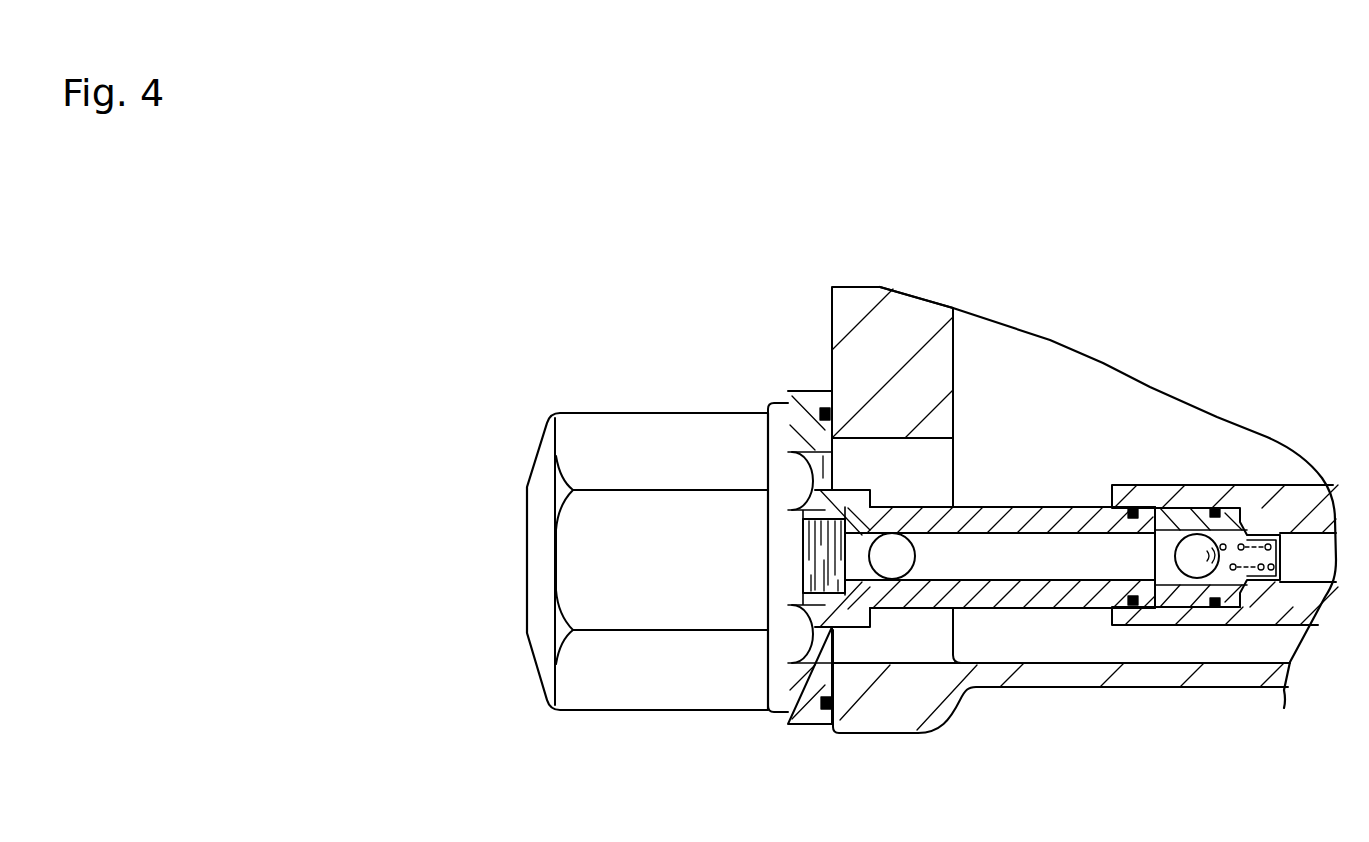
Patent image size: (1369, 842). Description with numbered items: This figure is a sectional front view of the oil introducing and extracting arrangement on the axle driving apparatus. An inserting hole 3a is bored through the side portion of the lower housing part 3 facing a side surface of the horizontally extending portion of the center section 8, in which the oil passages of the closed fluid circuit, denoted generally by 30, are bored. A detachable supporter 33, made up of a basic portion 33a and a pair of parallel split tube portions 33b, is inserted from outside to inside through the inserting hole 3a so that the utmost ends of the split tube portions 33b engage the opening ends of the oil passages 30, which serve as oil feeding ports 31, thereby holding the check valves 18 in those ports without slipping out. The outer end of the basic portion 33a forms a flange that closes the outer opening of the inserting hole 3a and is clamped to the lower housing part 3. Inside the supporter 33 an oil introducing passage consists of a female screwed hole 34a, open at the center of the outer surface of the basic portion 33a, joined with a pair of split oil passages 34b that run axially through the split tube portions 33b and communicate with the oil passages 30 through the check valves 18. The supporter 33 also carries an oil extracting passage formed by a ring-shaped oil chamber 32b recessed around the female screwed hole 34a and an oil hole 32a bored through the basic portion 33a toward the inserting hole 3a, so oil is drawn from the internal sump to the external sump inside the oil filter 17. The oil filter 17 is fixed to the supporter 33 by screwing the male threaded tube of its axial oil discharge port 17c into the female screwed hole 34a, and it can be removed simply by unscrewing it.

The lower housing part 3 is at (830, 304).
The inserting hole 3a is at (932, 493).
The center section 8 is at (1268, 485).
The oil filter 17 is at (673, 596).
The oil discharge port 17c is at (817, 593).
The check valve 18 is at (1207, 600).
The valve housing 30 is at (1318, 543).
The oil feeding port 31 is at (1190, 446).
The oil hole 32a is at (823, 477).
The oil chamber 32b is at (800, 481).
The supporter 33 is at (980, 481).
The basic portion 33a is at (817, 392).
The split tube portion 33b is at (992, 508).
The female screwed hole 34a is at (838, 598).
The split oil passage 34b is at (1038, 565).